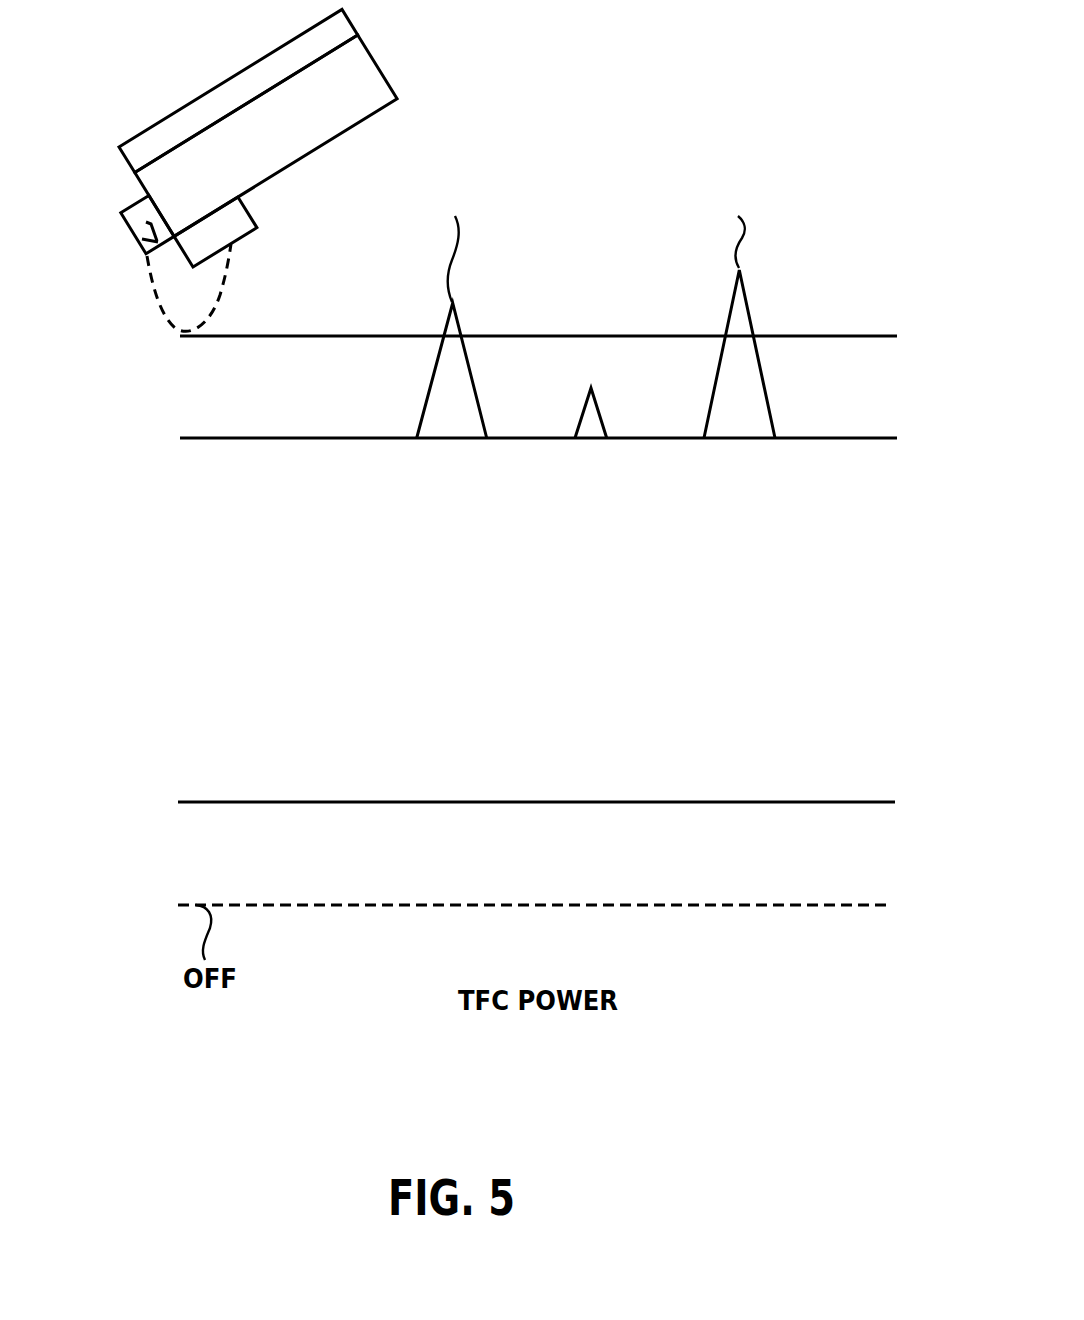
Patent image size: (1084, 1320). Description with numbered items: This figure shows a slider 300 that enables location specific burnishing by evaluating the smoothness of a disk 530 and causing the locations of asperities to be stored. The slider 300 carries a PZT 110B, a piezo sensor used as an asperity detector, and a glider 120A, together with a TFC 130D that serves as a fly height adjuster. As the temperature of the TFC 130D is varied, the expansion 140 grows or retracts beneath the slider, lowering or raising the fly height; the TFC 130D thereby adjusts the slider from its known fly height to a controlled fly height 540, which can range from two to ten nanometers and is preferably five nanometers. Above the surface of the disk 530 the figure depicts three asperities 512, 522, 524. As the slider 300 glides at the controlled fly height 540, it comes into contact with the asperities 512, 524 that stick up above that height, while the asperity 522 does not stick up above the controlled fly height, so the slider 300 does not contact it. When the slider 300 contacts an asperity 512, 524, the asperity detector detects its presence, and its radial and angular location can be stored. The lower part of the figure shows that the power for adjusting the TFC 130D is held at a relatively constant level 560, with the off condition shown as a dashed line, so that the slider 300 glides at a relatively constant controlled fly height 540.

The PZT 110B is at (238, 90).
The slider 300 is at (266, 135).
The glider 120A is at (241, 212).
The TFC 130D is at (145, 238).
The expansion 140 is at (163, 305).
The asperity 512 is at (452, 421).
The asperity 522 is at (588, 426).
The asperity 524 is at (741, 427).
The disk 530 is at (843, 441).
The controlled fly height 540 is at (818, 336).
The constant level 560 is at (362, 802).